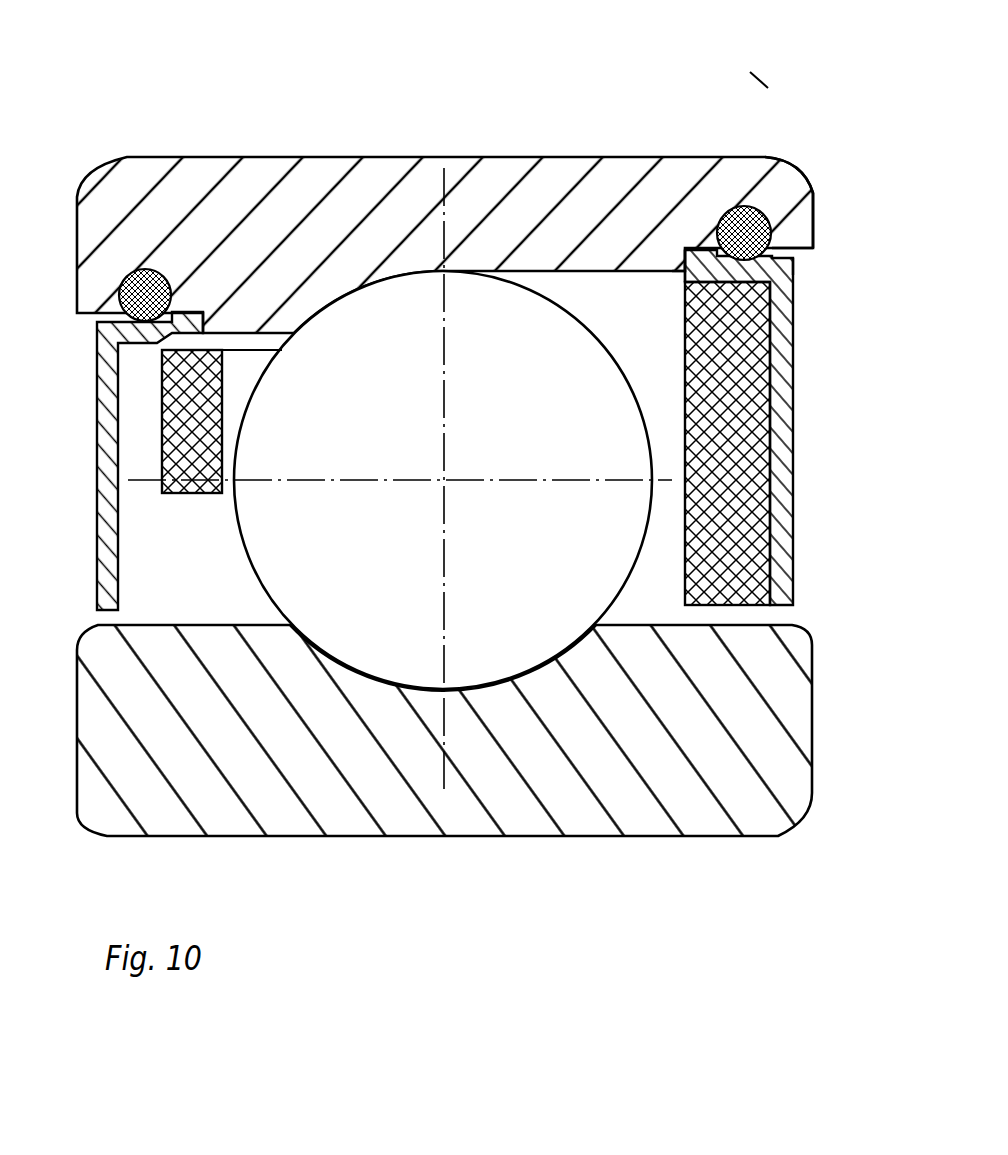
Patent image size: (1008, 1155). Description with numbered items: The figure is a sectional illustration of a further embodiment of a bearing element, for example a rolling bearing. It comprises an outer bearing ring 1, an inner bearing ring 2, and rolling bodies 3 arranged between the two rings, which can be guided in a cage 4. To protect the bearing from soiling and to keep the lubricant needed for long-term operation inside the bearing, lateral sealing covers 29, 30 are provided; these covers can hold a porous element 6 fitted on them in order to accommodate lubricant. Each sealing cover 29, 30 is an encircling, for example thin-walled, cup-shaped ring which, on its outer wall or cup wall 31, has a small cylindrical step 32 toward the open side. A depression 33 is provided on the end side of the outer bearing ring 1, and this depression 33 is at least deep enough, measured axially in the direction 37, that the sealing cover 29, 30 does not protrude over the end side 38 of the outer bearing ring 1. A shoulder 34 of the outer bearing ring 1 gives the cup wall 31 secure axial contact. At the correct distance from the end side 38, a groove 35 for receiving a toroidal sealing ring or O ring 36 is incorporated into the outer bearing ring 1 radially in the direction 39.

The outer bearing ring 1 is at (211, 159).
The inner bearing ring 2 is at (181, 838).
The rolling bodies 3 is at (390, 295).
The cage 4 is at (203, 355).
The porous element 6 is at (752, 437).
The sealing cover 29 is at (97, 458).
The sealing cover 30 is at (784, 505).
The outer wall 31 is at (681, 250).
The cylindrical step 32 is at (713, 267).
The depression 33 is at (804, 263).
The shoulder 34 is at (679, 266).
The groove 35 is at (732, 206).
The toroidal sealing ring 36 is at (795, 174).
The axial direction 37 is at (779, 137).
The end side 38 is at (818, 210).
The radial direction 39 is at (750, 72).